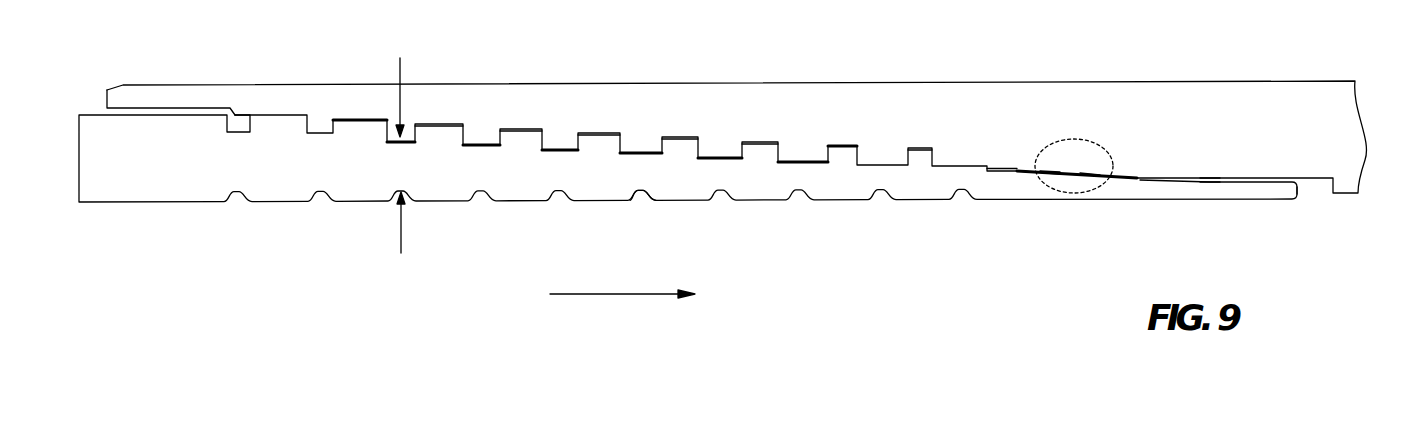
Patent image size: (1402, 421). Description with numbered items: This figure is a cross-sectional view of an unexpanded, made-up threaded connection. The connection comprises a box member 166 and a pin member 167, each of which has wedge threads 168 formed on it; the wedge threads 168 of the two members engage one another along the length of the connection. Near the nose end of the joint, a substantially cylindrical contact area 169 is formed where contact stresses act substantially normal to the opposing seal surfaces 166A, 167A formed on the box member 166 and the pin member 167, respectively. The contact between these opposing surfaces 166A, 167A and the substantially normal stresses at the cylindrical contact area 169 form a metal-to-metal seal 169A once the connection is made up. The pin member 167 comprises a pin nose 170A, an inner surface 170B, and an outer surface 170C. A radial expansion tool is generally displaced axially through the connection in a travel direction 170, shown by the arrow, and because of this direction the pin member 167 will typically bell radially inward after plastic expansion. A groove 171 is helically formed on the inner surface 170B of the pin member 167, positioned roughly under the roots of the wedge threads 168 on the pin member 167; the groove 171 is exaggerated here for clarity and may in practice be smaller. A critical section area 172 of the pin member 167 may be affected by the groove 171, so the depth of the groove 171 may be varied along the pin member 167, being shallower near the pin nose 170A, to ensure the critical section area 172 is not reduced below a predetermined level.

The box member 166 is at (1272, 92).
The pin member 167 is at (185, 190).
The wedge threads 168 is at (522, 145).
The substantially cylindrical contact area 169 is at (1097, 183).
The metal-to-metal seal 169A is at (1060, 172).
The seal surface of pin member 167A is at (1088, 172).
The seal surface of box member 166A is at (1053, 175).
The travel direction 170 is at (614, 296).
The pin nose 170A is at (1300, 197).
The inner surface 170B is at (1212, 198).
The outer surface 170C is at (1210, 176).
The groove 171 is at (643, 198).
The critical section area 172 is at (400, 139).